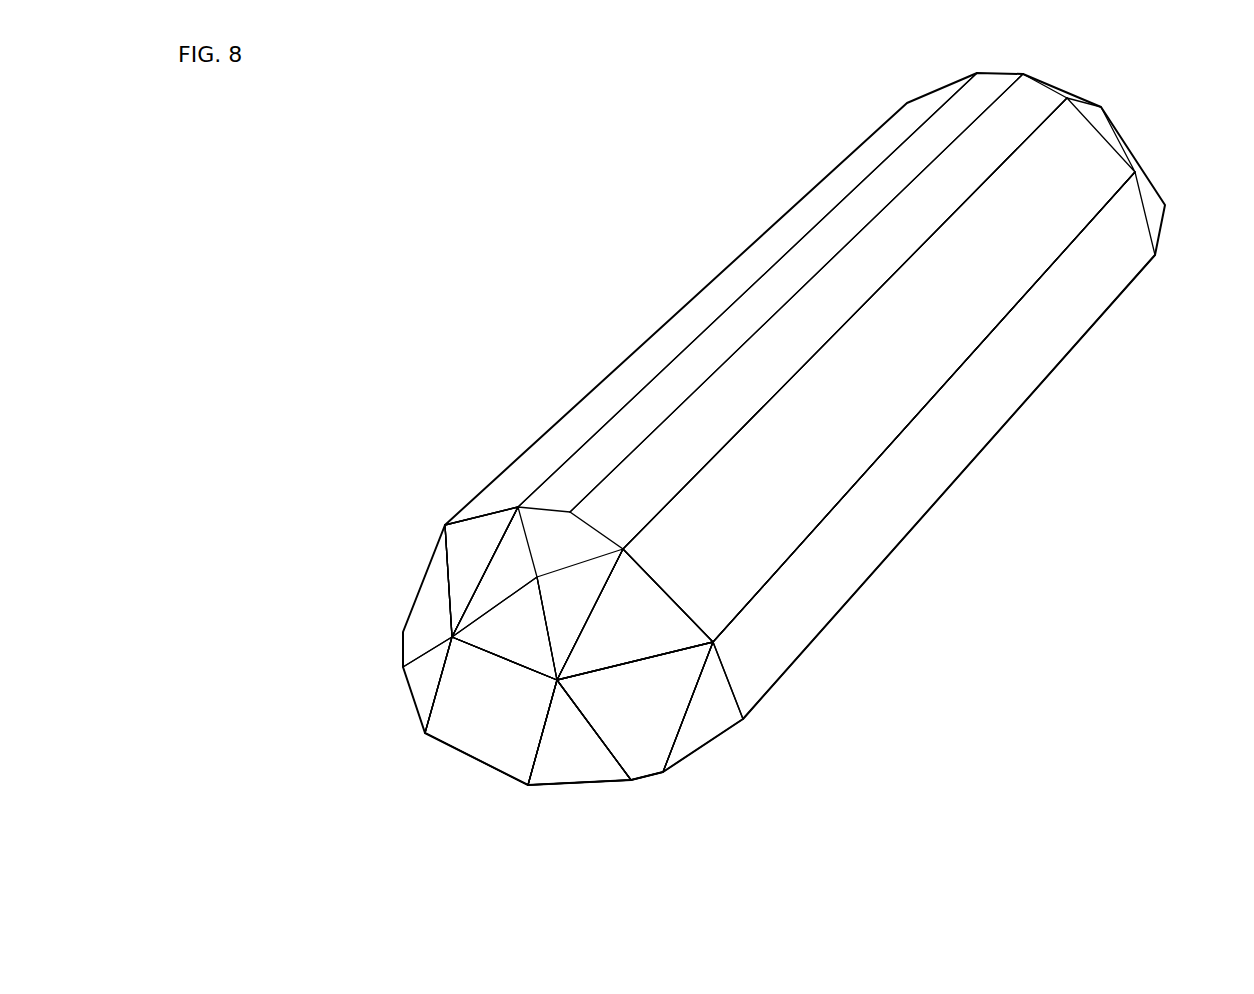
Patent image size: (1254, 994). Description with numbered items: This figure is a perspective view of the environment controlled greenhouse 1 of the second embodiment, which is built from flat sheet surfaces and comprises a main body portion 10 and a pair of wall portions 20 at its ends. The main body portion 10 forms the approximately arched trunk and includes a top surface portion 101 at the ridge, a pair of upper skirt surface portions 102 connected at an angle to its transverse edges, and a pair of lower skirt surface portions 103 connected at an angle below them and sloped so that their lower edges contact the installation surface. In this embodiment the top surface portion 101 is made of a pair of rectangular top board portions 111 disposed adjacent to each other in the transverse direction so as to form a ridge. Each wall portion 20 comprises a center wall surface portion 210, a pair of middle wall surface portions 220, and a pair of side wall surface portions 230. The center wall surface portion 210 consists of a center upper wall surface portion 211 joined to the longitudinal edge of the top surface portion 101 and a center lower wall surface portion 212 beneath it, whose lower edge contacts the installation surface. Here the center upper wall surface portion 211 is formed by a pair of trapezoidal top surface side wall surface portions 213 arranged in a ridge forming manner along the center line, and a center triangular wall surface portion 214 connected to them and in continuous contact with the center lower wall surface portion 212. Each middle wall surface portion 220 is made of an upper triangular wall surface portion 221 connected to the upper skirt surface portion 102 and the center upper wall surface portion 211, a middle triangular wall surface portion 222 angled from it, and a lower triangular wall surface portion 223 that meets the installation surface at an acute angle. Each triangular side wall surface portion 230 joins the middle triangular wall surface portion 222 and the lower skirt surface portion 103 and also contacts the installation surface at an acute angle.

The environment controlled greenhouse 1 is at (486, 83).
The main body portion 10 is at (669, 266).
The wall portion 20 is at (399, 547).
The top surface portion 101 is at (926, 370).
The upper skirt surface portion 102 is at (827, 203).
The lower skirt surface portion 103 is at (925, 468).
The top board portion 111 is at (872, 192).
The center wall surface portion 210 is at (397, 700).
The center upper wall surface portion 211 is at (337, 778).
The center lower wall surface portion 212 is at (493, 747).
The top surface side wall surface portion 213 is at (485, 593).
The center triangular wall surface portion 214 is at (503, 633).
The middle wall surface portion 220 is at (700, 860).
The upper triangular wall surface portion 221 is at (643, 637).
The middle triangular wall surface portion 222 is at (635, 732).
The lower triangular wall surface portion 223 is at (560, 765).
The side wall surface portion 230 is at (712, 727).